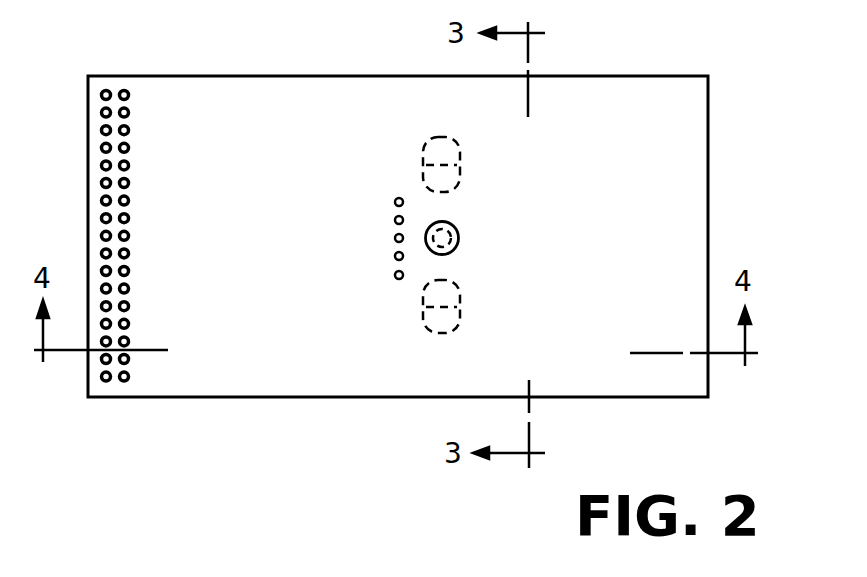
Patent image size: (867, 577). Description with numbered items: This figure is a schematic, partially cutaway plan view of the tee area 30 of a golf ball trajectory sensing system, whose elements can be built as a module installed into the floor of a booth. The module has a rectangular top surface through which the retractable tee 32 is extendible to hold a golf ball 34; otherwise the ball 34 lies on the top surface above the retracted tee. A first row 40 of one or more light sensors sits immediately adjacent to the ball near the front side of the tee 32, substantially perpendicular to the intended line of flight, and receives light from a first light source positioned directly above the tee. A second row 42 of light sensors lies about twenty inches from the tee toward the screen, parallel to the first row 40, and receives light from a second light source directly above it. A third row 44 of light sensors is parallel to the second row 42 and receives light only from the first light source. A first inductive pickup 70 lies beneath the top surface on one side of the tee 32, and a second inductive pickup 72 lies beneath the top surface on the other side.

The tee area 30 is at (708, 150).
The retractable tee 32 is at (460, 245).
The golf ball 34 is at (456, 228).
The first row of light sensors 40 is at (394, 238).
The second row of light sensors 42 is at (127, 91).
The third row of light sensors 44 is at (105, 91).
The first inductive pickup 70 is at (462, 163).
The second inductive pickup 72 is at (462, 318).